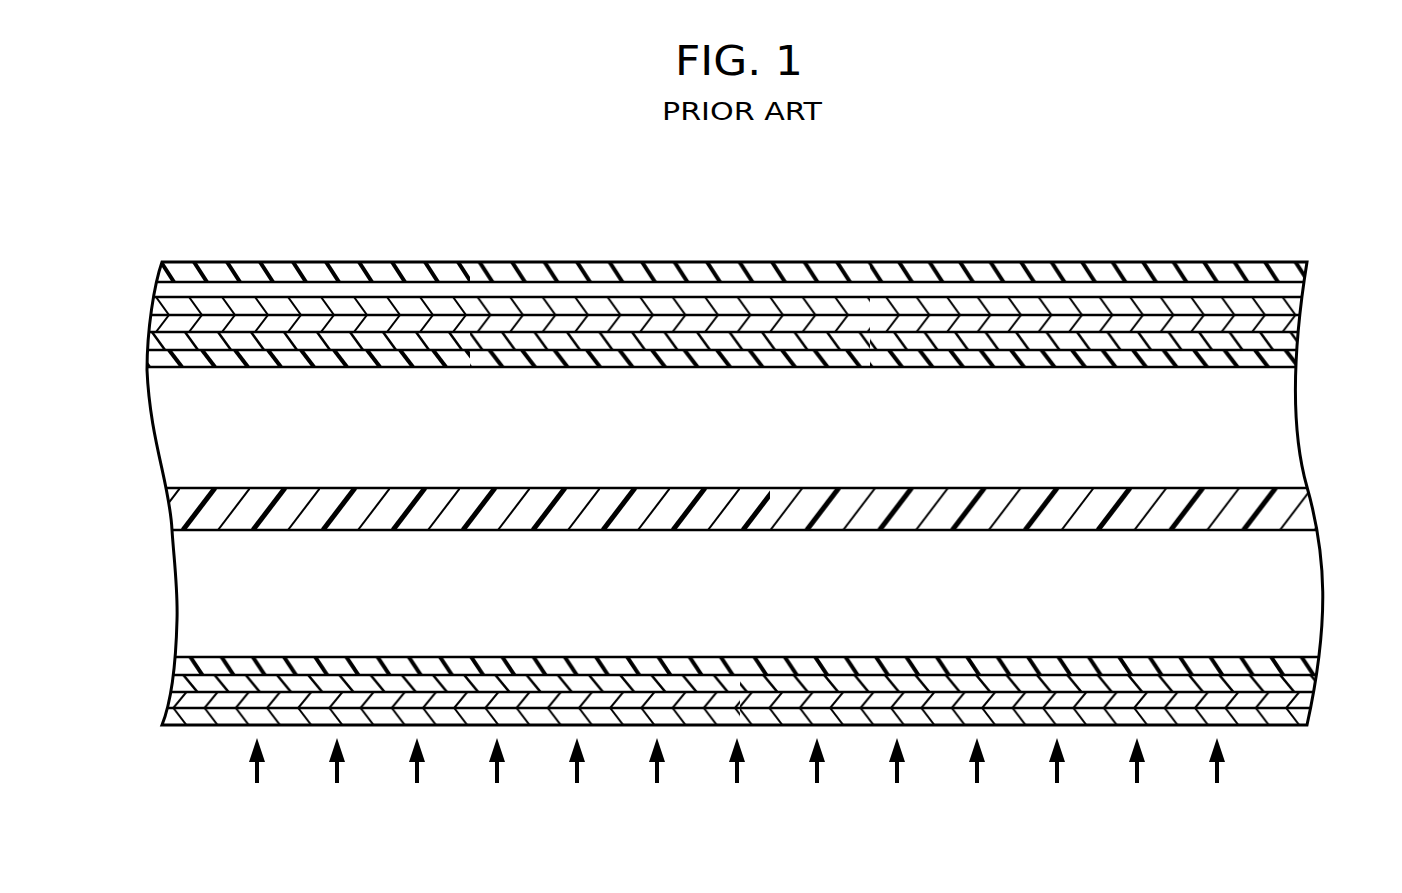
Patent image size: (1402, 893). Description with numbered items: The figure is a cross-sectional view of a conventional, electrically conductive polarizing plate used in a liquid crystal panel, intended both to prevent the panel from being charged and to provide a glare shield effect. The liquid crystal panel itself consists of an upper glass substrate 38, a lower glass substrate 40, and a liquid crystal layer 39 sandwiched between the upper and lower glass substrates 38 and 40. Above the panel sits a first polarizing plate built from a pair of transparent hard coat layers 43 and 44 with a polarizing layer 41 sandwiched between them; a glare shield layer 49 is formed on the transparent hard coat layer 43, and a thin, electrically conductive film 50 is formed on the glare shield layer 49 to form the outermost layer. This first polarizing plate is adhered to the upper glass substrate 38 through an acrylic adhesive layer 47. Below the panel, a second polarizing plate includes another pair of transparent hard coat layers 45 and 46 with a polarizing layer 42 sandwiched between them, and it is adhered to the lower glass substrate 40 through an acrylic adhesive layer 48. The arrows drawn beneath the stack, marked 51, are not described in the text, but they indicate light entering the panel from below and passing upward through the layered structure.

The thin, electrically conductive film 50 is at (1285, 271).
The glare shield layer 49 is at (162, 292).
The transparent hard coat layer 43 is at (1283, 305).
The polarizing layer 41 is at (160, 322).
The transparent hard coat layer 44 is at (1270, 342).
The acrylic adhesive layer 47 is at (165, 355).
The upper glass substrate 38 is at (1268, 432).
The liquid crystal layer 39 is at (1280, 502).
The lower glass substrate 40 is at (1295, 572).
The acrylic adhesive layer 48 is at (1300, 668).
The transparent hard coat layer 45 is at (190, 684).
The polarizing layer 42 is at (1300, 700).
The transparent hard coat layer 46 is at (178, 711).
The incident light 51 is at (1237, 763).